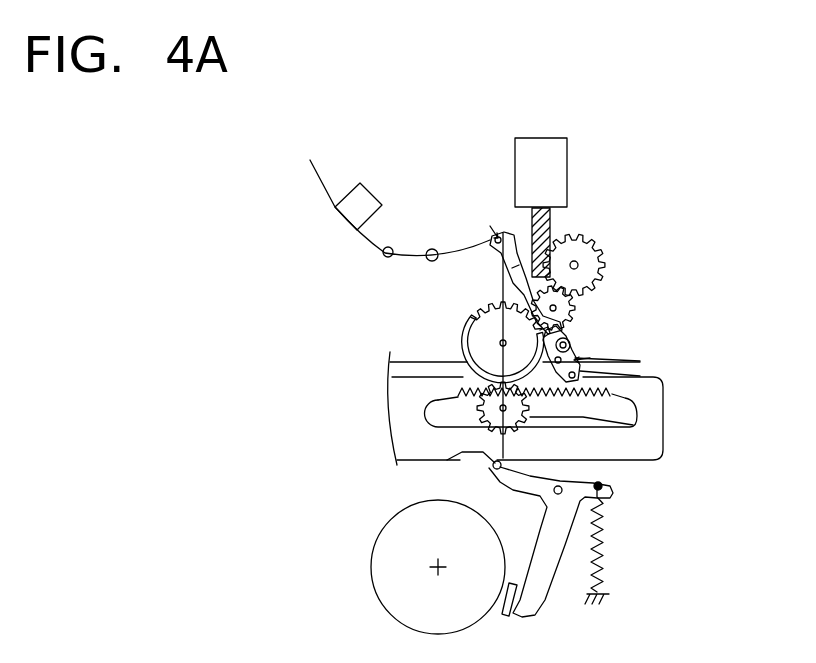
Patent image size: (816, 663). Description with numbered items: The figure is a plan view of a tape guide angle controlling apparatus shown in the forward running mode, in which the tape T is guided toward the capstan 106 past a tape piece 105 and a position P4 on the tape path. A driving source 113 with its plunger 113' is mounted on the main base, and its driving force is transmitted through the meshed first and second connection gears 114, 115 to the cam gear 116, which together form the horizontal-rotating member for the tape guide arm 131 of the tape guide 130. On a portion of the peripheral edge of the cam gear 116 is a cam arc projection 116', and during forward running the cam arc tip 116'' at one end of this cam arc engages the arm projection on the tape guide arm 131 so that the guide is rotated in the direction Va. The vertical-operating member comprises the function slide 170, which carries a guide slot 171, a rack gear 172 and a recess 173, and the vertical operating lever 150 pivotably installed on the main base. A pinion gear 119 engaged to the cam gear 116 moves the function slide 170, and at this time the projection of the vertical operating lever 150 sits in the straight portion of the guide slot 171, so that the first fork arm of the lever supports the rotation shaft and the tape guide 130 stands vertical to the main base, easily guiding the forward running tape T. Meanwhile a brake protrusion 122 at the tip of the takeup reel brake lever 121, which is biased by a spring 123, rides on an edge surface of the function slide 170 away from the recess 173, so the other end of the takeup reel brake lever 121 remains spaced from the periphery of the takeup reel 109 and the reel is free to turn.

The tape T is at (317, 163).
The tape piece 105 is at (352, 192).
The position P4 is at (390, 247).
The capstan 106 is at (430, 259).
The driving source 113 is at (578, 167).
The solenoid plunger 113' is at (589, 239).
The first connection gear 114 is at (606, 262).
The second connection gear 115 is at (574, 311).
The tape guide 130 is at (503, 235).
The direction Va is at (544, 283).
The tape guide arm 131 is at (510, 268).
The cam gear 116 is at (454, 320).
The cam arc tip 116'' is at (438, 349).
The cam arc projection 116' is at (428, 365).
The function slide 170 is at (402, 412).
The guide slot 171 is at (603, 368).
The rack gear 172 is at (612, 393).
The pinion gear 119 is at (610, 418).
The vertical operating lever 150 is at (605, 375).
The recess 173 is at (457, 462).
The brake protrusion 122 is at (462, 457).
The takeup reel brake lever 121 is at (543, 565).
The spring 123 is at (597, 537).
The takeup reel 109 is at (378, 585).